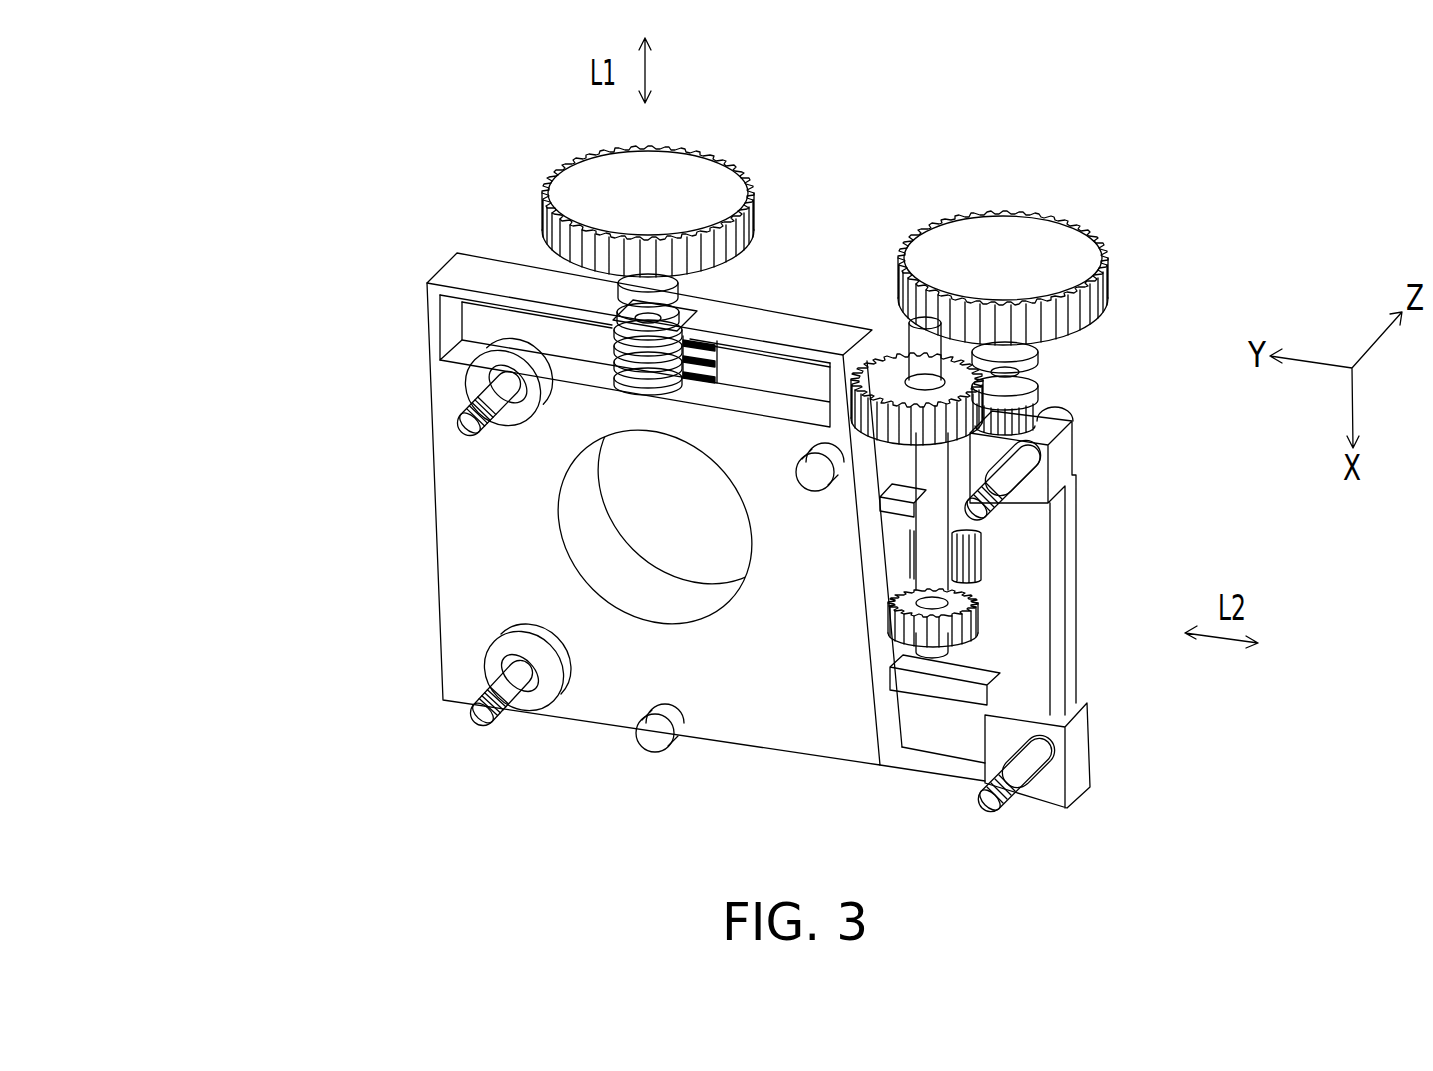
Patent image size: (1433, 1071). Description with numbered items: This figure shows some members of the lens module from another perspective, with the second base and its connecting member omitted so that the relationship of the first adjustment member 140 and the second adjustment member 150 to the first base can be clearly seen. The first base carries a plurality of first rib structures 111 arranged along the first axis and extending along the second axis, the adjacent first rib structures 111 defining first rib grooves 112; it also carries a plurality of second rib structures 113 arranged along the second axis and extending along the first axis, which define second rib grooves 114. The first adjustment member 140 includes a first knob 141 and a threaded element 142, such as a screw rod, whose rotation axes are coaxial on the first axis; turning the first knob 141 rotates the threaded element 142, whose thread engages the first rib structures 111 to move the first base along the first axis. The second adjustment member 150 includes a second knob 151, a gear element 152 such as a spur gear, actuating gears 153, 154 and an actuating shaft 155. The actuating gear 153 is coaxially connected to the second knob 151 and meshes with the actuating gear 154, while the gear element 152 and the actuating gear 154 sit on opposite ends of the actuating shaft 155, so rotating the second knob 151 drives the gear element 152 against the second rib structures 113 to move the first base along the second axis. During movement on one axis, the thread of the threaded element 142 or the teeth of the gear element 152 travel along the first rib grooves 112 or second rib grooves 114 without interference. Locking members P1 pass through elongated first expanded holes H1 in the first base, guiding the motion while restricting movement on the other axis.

The first rib structure 111 is at (713, 385).
The first rib groove 112 is at (712, 351).
The second rib structure 113 is at (980, 563).
The second rib groove 114 is at (978, 540).
The first adjustment member 140 is at (275, 46).
The first knob 141 is at (558, 170).
The threaded element 142 is at (640, 383).
The second adjustment member 150 is at (136, 46).
The second knob 151 is at (1067, 218).
The gear element 152 is at (983, 612).
The actuating gear 153 is at (1070, 421).
The actuating gear 154 is at (886, 352).
The actuating shaft 155 is at (932, 545).
The first expanded hole H1 is at (505, 656).
The locking member P1 is at (1018, 775).